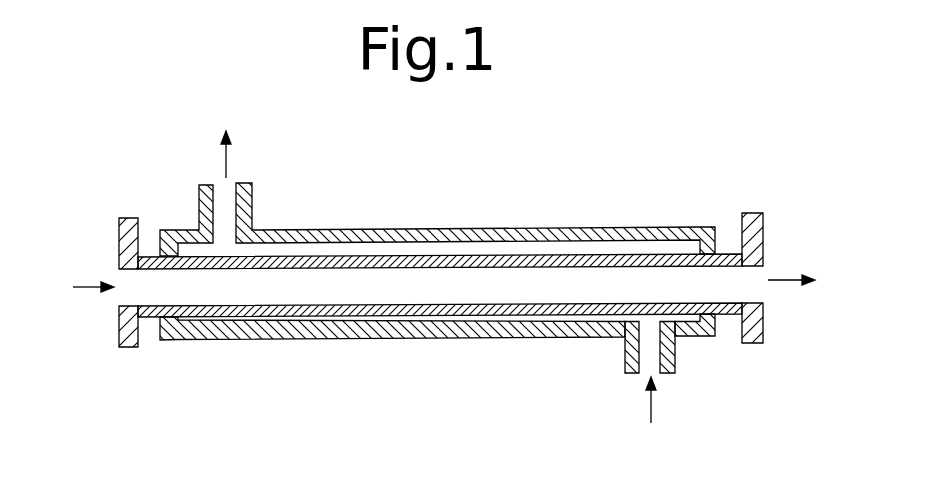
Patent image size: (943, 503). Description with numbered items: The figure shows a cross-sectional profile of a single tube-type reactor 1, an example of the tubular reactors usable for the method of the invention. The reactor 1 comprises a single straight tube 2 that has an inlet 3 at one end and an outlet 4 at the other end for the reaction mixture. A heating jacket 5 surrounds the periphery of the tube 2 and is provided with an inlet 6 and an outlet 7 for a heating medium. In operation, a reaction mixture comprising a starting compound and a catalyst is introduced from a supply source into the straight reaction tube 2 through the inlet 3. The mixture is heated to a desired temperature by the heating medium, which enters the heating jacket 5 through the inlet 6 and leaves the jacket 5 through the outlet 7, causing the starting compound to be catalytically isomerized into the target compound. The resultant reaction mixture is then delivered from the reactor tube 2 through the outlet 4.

The single tube-type reactor 1 is at (402, 206).
The single straight tube 2 is at (494, 283).
The inlet 3 is at (122, 278).
The outlet 4 is at (753, 277).
The heating jacket 5 is at (323, 250).
The inlet 6 is at (652, 343).
The outlet 7 is at (227, 205).